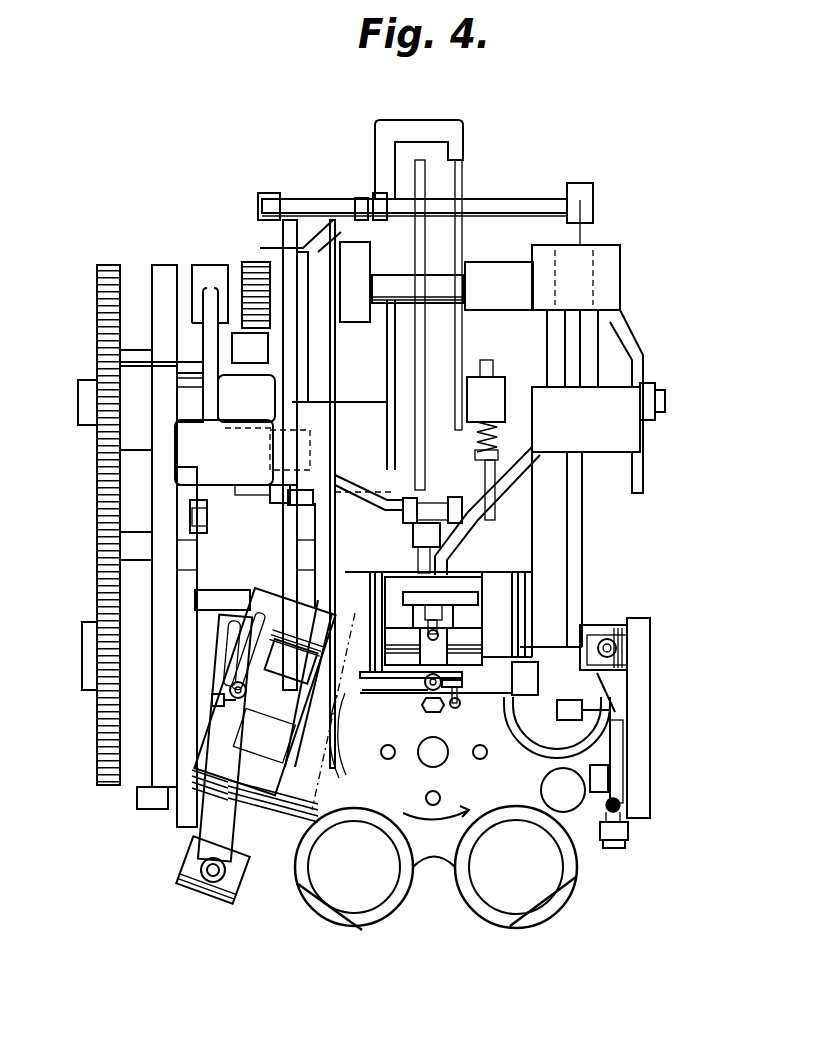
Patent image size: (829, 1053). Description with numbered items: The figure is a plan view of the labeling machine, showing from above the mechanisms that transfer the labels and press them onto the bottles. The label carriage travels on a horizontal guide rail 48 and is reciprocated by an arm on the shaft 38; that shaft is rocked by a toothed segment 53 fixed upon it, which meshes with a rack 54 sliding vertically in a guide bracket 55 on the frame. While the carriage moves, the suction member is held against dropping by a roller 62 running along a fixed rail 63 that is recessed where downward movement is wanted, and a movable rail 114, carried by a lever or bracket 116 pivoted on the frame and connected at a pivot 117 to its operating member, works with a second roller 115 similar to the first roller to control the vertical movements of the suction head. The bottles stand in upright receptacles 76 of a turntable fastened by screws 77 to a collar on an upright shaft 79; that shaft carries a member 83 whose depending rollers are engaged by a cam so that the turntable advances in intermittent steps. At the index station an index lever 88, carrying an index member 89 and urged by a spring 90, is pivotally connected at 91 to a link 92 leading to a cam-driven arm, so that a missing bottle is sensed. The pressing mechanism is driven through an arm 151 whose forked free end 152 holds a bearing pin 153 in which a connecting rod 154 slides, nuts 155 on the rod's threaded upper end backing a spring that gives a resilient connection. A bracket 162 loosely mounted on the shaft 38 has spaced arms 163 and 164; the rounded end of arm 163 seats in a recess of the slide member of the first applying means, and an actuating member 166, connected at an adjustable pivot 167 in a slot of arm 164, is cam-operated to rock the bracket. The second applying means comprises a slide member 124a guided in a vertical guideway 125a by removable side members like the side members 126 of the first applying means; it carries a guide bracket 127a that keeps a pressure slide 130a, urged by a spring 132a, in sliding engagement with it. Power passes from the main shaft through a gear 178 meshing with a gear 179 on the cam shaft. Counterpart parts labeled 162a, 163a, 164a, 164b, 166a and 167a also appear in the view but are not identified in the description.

The shaft 38 is at (440, 283).
The horizontal guide rail 48 is at (430, 180).
The toothed segment 53 is at (258, 262).
The rack 54 is at (222, 392).
The guide bracket 55 is at (235, 343).
The roller 62 is at (488, 520).
The fixed rail 63 is at (458, 358).
The upright receptacles 76 is at (575, 765).
The screws 77 is at (446, 710).
The upright shaft 79 is at (444, 762).
The member 83 is at (437, 866).
The index lever 88 is at (616, 745).
The index member 89 is at (557, 710).
The spring 90 is at (618, 800).
The pivotal connection 91 is at (628, 832).
The link 92 is at (622, 846).
The movable rail 114 is at (395, 375).
The second roller 115 is at (400, 515).
The lever or bracket 116 is at (378, 440).
The pivotal connection 117 is at (190, 424).
The slide member 124a is at (352, 702).
The vertical guideway 125a is at (350, 728).
The side members 126 is at (288, 760).
The guide bracket 127a is at (300, 712).
The pressure slide 130a is at (372, 762).
The spring 132a is at (300, 700).
The arm 151 is at (552, 662).
The forked free end 152 is at (620, 628).
The bearing pin 153 is at (625, 656).
The connecting rod 154 is at (620, 648).
The nuts 155 is at (598, 632).
The bracket 162 is at (603, 280).
The block 162a is at (270, 478).
The arm 163 is at (472, 560).
The link 163a is at (317, 557).
The arm 164 is at (630, 345).
The plate 164a is at (203, 362).
The plate 164b is at (190, 555).
The actuating member 166 is at (660, 390).
The nut 166a is at (108, 510).
The pivot 167 is at (666, 409).
The screw 167a is at (218, 500).
The gear 178 is at (97, 272).
The gear 179 is at (108, 765).